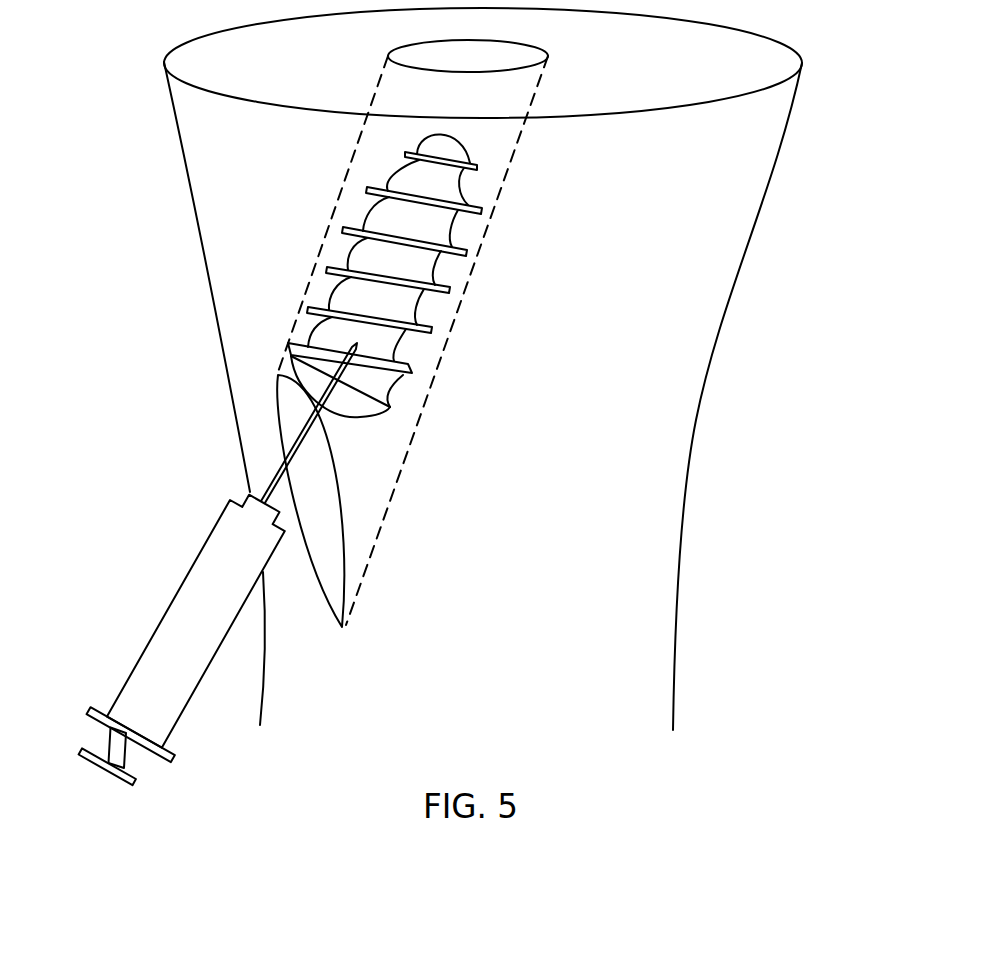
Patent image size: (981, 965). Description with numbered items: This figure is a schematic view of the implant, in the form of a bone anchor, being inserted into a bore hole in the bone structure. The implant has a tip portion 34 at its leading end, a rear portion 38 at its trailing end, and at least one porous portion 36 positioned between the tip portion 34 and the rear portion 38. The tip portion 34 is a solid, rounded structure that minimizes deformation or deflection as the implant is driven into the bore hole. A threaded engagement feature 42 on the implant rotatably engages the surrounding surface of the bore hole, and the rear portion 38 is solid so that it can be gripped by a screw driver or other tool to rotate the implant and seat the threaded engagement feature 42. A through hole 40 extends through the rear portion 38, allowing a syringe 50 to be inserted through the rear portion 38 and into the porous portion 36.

The tip portion 34 is at (470, 150).
The porous portion 36 is at (410, 363).
The rear portion 38 is at (382, 420).
The through hole 40 is at (318, 402).
The threaded engagement feature 42 is at (327, 257).
The syringe 50 is at (152, 632).